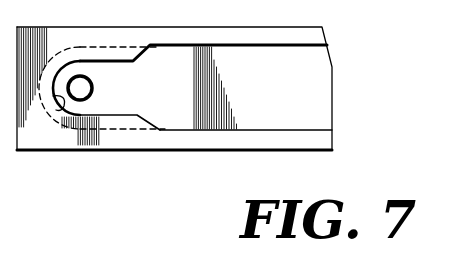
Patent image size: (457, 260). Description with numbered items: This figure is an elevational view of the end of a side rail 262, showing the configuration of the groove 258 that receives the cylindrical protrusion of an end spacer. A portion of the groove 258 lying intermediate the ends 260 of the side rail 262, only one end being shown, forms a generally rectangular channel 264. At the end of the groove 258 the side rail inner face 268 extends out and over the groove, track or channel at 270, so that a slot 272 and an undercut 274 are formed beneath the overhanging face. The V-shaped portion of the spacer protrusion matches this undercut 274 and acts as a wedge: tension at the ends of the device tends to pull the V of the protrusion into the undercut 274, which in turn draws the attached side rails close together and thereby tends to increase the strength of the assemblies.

The groove 258 is at (283, 66).
The end 260 is at (42, 27).
The side rail 262 is at (228, 155).
The rectangular channel 264 is at (290, 114).
The side rail inner face 268 is at (99, 53).
The channel overhang location 270 is at (107, 103).
The slot 272 is at (112, 86).
The undercut 274 is at (62, 103).